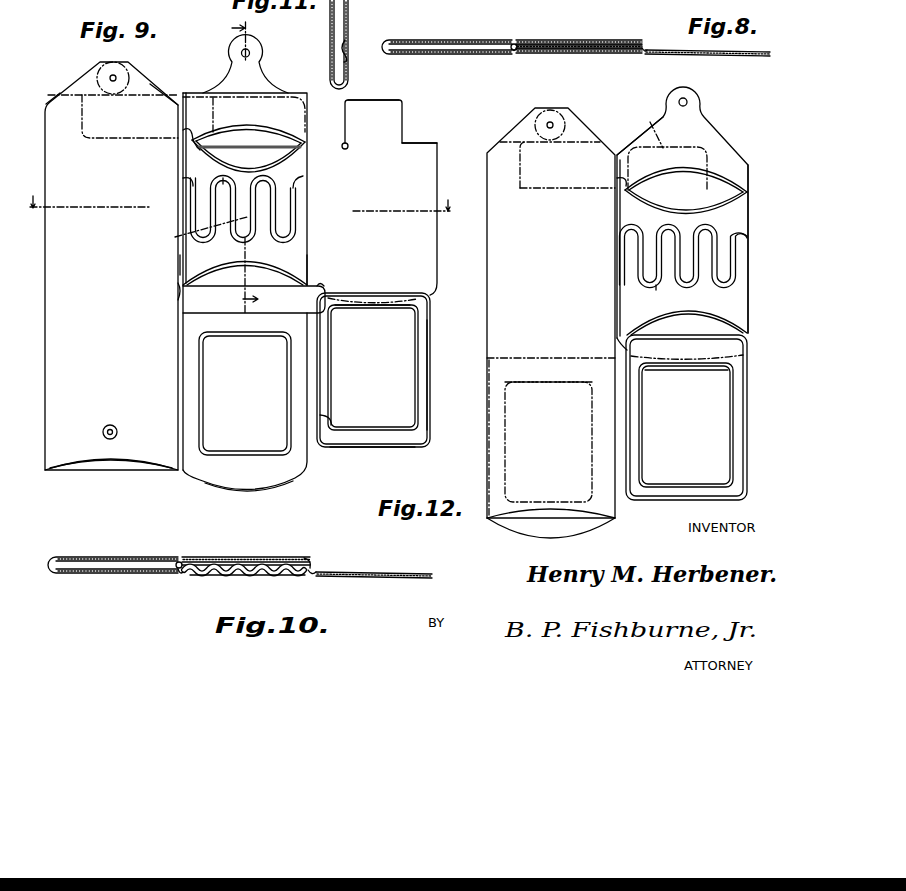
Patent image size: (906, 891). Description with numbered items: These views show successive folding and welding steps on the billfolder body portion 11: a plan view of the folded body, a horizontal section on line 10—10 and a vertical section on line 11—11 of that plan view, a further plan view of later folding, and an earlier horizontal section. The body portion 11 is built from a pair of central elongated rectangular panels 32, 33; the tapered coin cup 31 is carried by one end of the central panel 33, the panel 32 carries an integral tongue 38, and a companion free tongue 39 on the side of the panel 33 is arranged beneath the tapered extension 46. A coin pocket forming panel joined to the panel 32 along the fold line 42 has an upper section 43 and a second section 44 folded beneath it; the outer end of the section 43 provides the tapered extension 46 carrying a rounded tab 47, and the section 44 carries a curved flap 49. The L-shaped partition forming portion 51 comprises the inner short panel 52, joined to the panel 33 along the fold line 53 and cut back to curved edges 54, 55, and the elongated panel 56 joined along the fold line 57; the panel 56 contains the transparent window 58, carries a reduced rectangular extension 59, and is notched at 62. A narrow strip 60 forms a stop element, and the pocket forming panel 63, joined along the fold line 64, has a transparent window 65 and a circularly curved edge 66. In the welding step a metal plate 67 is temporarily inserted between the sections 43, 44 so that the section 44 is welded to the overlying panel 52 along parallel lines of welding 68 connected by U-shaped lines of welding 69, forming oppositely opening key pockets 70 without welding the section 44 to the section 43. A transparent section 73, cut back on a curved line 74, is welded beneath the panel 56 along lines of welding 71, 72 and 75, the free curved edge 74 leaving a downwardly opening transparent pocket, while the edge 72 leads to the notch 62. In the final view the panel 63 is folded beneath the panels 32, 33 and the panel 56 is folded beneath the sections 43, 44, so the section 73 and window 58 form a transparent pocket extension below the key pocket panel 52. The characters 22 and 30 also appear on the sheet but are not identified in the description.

In FIG. 9, the section line 10 is at (243, 216).
In FIG. 9, the billfolder body portion 11 is at (257, 165).
In FIG. 9, the window frame panel 22 is at (420, 336).
In FIG. 12, the window frame panel 22 is at (686, 417).
In FIG. 9, the snap fastener 30 is at (97, 75).
In FIG. 9, the tapered coin cup 31 is at (134, 75).
In FIG. 12, the tapered coin cup 31 is at (577, 110).
In FIG. 9, the central elongated panel 32 is at (113, 468).
In FIG. 8, the central elongated panel 32 is at (460, 40).
In FIG. 10, the central elongated panel 32 is at (129, 557).
In FIG. 9, the central elongated panel 33 is at (111, 266).
In FIG. 8, the central elongated panel 33 is at (436, 58).
In FIG. 10, the central elongated panel 33 is at (110, 576).
In FIG. 12, the central elongated panel 33 is at (551, 323).
In FIG. 9, the integral tongue 38 is at (67, 120).
In FIG. 9, the companion free tongue 39 is at (160, 96).
In FIG. 8, the fold line 42 is at (513, 43).
In FIG. 10, the fold line 42 is at (178, 562).
In FIG. 8, the first panel section 43 is at (588, 40).
In FIG. 10, the first panel section 43 is at (254, 557).
In FIG. 9, the second panel section 44 is at (285, 147).
In FIG. 8, the second panel section 44 is at (550, 43).
In FIG. 10, the second panel section 44 is at (216, 547).
In FIG. 12, the second panel section 44 is at (740, 324).
In FIG. 9, the tapered extension 46 is at (222, 78).
In FIG. 12, the tapered extension 46 is at (722, 150).
In FIG. 9, the rounded tab 47 is at (255, 48).
In FIG. 12, the rounded tab 47 is at (690, 102).
In FIG. 9, the curved flap 49 is at (248, 137).
In FIG. 12, the curved flap 49 is at (730, 186).
In FIG. 9, the partition forming portion 51 is at (426, 170).
In FIG. 9, the inner short panel 52 is at (245, 281).
In FIG. 8, the inner short panel 52 is at (600, 56).
In FIG. 12, the inner short panel 52 is at (748, 300).
In FIG. 9, the fold line 53 is at (182, 266).
In FIG. 8, the fold line 53 is at (517, 56).
In FIG. 10, the fold line 53 is at (173, 575).
In FIG. 9, the curved edge 54 is at (205, 150).
In FIG. 9, the curved edge 55 is at (308, 266).
In FIG. 9, the elongated rectangular panel 56 is at (410, 267).
In FIG. 8, the elongated rectangular panel 56 is at (725, 56).
In FIG. 10, the elongated rectangular panel 56 is at (366, 578).
In FIG. 12, the elongated rectangular panel 56 is at (750, 348).
In FIG. 8, the fold line 57 is at (646, 50).
In FIG. 10, the fold line 57 is at (318, 567).
In FIG. 9, the transparent window 58 is at (400, 367).
In FIG. 12, the transparent window 58 is at (710, 430).
In FIG. 9, the reduced rectangular extension 59 is at (393, 113).
In FIG. 12, the reduced rectangular extension 59 is at (645, 126).
In FIG. 9, the stop forming strip 60 is at (178, 300).
In FIG. 12, the stop forming strip 60 is at (617, 346).
In FIG. 9, the notch 62 is at (322, 291).
In FIG. 9, the pocket forming panel 63 is at (230, 324).
In FIG. 12, the pocket forming panel 63 is at (500, 387).
In FIG. 9, the fold line 64 is at (181, 390).
In FIG. 12, the fold line 64 is at (551, 436).
In FIG. 9, the transparent window 65 is at (245, 393).
In FIG. 12, the transparent window 65 is at (522, 419).
In FIG. 9, the curved edge 66 is at (268, 492).
In FIG. 8, the curved edge 66 is at (614, 5).
In FIG. 9, the metal plate 67 is at (287, 103).
In FIG. 10, the metal plate 67 is at (313, 558).
In FIG. 12, the metal plate 67 is at (667, 168).
In FIG. 9, the parallel lines of welding 68 is at (277, 203).
In FIG. 10, the parallel lines of welding 68 is at (236, 575).
In FIG. 12, the parallel lines of welding 68 is at (715, 268).
In FIG. 9, the U-shaped lines of welding 69 is at (272, 180).
In FIG. 11, the U-shaped lines of welding 69 is at (346, 42).
In FIG. 12, the U-shaped lines of welding 69 is at (716, 232).
In FIG. 9, the key pockets 70 is at (175, 237).
In FIG. 11, the key pockets 70 is at (350, 14).
In FIG. 10, the key pockets 70 is at (200, 576).
In FIG. 9, the line of welding 71 is at (428, 385).
In FIG. 9, the line of welding 72 is at (330, 420).
In FIG. 9, the transparent section 73 is at (405, 320).
In FIG. 12, the transparent section 73 is at (720, 385).
In FIG. 9, the curved edge 74 is at (430, 292).
In FIG. 12, the curved edge 74 is at (700, 362).
In FIG. 9, the line of welding 75 is at (392, 447).